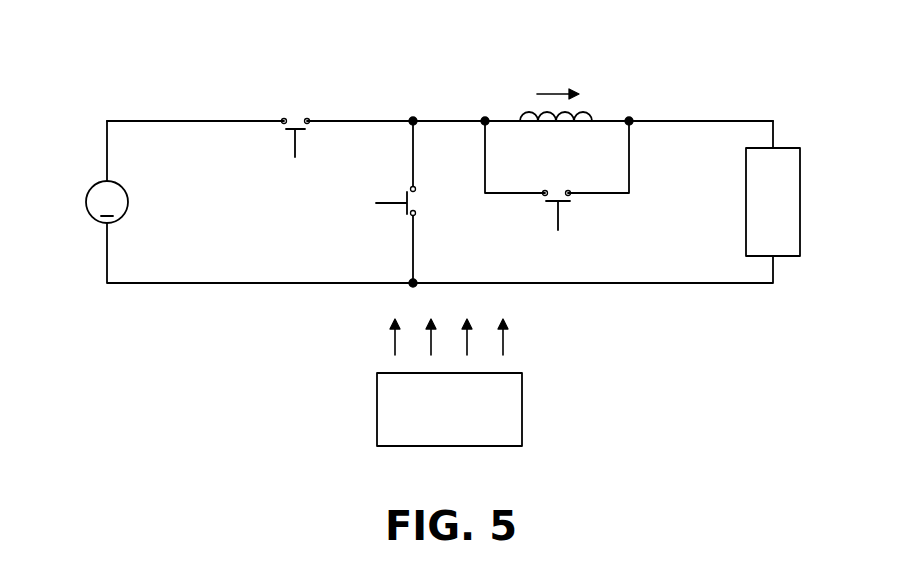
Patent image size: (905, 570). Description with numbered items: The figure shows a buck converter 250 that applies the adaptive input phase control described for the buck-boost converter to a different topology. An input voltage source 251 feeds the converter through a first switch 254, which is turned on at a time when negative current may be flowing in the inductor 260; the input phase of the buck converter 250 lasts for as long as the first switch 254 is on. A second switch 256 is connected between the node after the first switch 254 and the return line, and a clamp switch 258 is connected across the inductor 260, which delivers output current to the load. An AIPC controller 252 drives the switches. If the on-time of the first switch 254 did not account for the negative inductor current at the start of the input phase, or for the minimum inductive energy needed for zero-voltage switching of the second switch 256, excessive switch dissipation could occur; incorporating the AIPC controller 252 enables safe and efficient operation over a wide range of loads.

The buck converter 250 is at (211, 58).
The input voltage source 251 is at (100, 182).
The AIPC controller 252 is at (504, 373).
The switch S6 254 is at (284, 133).
The switch S7 256 is at (405, 195).
The clamp switch S8 258 is at (565, 203).
The inductor 260 is at (586, 113).